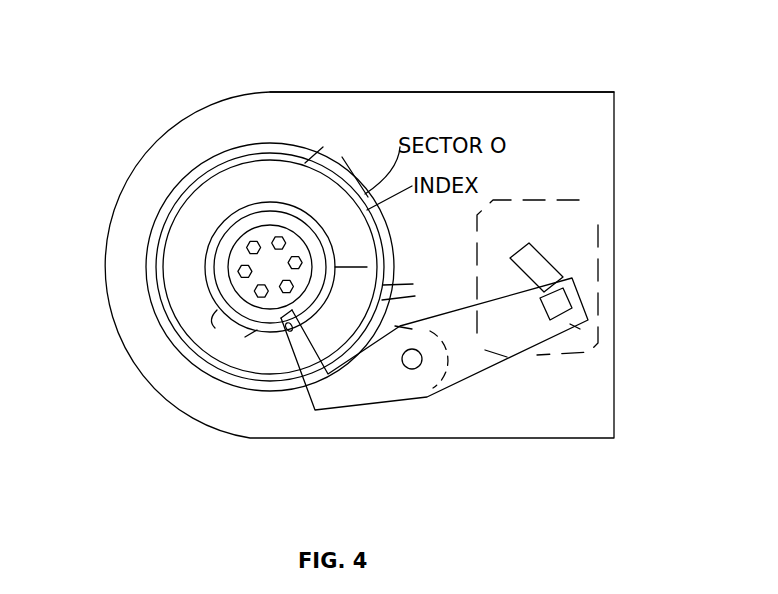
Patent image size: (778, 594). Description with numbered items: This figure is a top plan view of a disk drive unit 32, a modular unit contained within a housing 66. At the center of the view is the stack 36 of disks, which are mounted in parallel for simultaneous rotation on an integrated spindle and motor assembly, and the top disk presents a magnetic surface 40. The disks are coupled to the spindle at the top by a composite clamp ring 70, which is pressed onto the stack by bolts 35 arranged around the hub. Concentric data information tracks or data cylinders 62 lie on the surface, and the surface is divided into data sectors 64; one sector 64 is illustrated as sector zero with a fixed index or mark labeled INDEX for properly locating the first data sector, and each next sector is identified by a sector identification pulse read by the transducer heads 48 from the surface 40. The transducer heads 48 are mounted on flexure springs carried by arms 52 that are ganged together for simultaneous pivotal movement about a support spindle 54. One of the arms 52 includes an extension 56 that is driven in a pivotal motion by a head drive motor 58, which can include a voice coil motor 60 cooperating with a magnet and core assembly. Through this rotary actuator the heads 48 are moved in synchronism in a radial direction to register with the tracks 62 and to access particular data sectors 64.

The disk drive unit 32 is at (614, 80).
The housing 66 is at (505, 92).
The stack of disks 36 is at (128, 228).
The magnetic surface 40 is at (190, 178).
The bolts 35 is at (245, 250).
The composite clamp ring 70 is at (228, 270).
The data information tracks 62 is at (237, 356).
The data sectors 64 is at (358, 155).
The transducer heads 48 is at (286, 332).
The arms 52 is at (347, 402).
The support spindle 54 is at (414, 369).
The extension 56 is at (527, 335).
The voice coil motor 60 is at (558, 305).
The head drive motor 58 is at (581, 226).